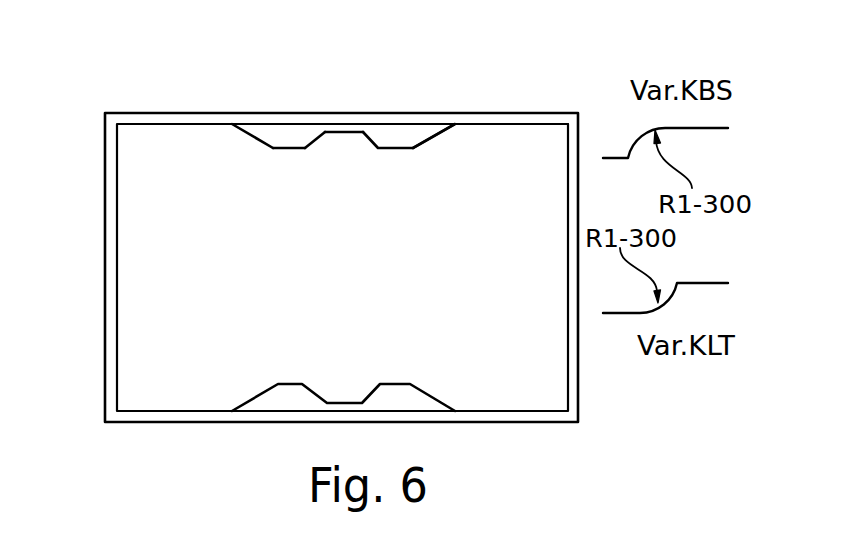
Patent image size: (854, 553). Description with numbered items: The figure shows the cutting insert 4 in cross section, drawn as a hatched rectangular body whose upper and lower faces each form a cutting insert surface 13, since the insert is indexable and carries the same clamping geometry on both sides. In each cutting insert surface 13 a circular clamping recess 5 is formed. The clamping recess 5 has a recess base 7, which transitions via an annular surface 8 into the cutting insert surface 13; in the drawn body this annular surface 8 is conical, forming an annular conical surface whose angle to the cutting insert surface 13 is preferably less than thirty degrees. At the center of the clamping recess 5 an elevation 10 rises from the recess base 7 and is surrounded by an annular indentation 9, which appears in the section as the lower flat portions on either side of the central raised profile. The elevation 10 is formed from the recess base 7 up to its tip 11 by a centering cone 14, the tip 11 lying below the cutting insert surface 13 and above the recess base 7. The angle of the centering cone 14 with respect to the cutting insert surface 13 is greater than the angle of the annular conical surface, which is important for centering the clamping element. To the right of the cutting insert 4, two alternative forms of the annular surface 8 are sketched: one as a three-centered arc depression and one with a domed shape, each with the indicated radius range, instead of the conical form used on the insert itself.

The cutting insert 4 is at (117, 302).
The cutting insert surface 13 is at (169, 124).
The clamping recess 5 is at (273, 137).
The centering cone 14 is at (312, 148).
The tip 11 is at (329, 147).
The elevation 10 is at (351, 152).
The annular indentation 9 is at (406, 138).
The annular surface 8 is at (430, 134).
The recess base 7 is at (407, 149).